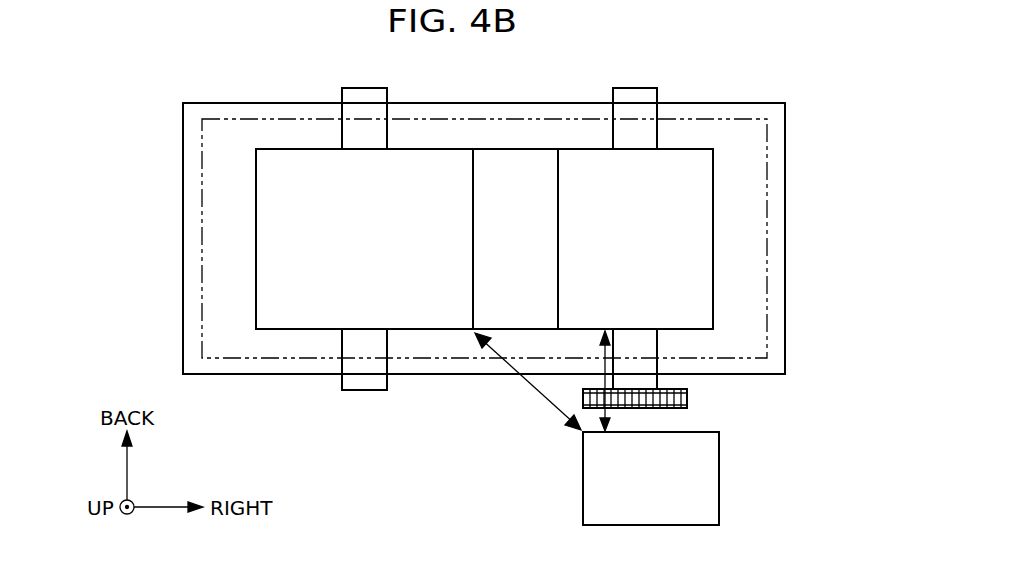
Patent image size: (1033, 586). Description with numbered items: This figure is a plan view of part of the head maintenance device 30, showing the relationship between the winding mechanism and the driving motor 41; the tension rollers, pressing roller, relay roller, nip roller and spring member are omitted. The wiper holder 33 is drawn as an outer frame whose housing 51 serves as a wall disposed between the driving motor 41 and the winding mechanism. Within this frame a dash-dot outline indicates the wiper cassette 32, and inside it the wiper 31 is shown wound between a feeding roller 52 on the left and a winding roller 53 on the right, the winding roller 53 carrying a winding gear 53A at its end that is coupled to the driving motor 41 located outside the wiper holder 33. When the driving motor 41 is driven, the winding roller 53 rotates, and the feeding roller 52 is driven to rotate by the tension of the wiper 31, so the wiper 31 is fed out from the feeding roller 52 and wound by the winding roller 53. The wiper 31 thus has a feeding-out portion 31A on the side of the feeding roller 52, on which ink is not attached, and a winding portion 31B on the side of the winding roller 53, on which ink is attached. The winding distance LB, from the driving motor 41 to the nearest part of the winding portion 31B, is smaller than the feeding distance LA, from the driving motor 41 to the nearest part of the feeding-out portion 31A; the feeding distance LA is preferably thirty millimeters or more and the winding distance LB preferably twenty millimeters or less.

The head maintenance device 30 is at (774, 68).
The wiper 31 is at (700, 252).
The feeding-out portion 31A is at (267, 172).
The winding portion 31B is at (702, 182).
The wiper cassette 32 is at (710, 118).
The wiper holder 33 is at (798, 376).
The driving motor 41 is at (713, 490).
The housing 51 is at (775, 375).
The feeding roller 52 is at (349, 343).
The winding roller 53 is at (650, 343).
The winding gear 53A is at (665, 409).
The feeding distance LA is at (528, 381).
The winding distance LB is at (602, 365).